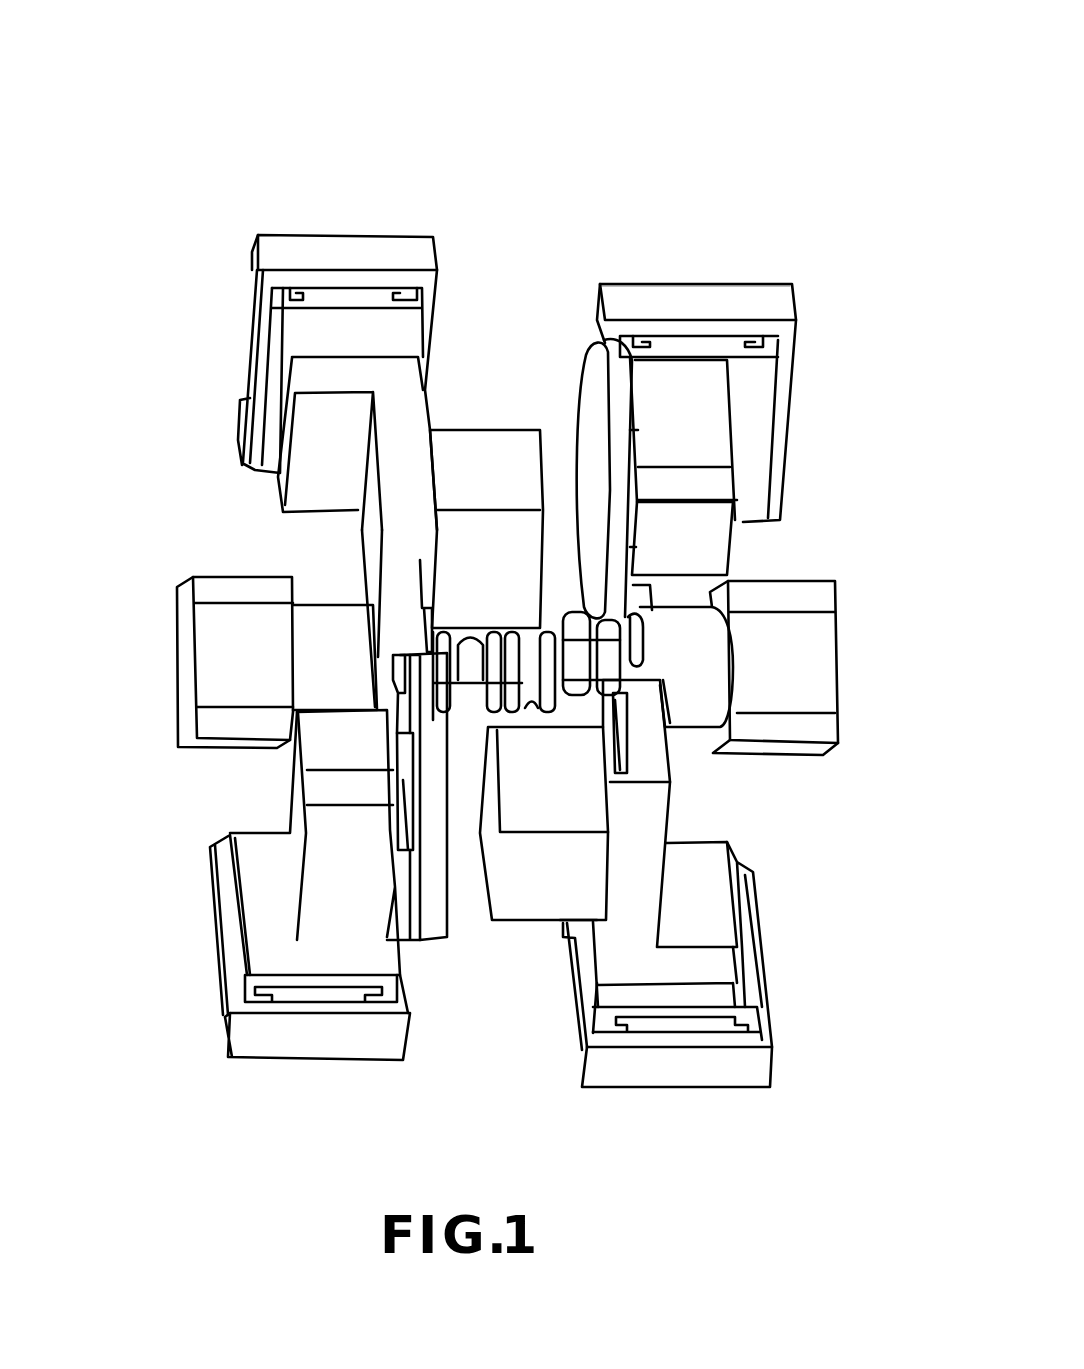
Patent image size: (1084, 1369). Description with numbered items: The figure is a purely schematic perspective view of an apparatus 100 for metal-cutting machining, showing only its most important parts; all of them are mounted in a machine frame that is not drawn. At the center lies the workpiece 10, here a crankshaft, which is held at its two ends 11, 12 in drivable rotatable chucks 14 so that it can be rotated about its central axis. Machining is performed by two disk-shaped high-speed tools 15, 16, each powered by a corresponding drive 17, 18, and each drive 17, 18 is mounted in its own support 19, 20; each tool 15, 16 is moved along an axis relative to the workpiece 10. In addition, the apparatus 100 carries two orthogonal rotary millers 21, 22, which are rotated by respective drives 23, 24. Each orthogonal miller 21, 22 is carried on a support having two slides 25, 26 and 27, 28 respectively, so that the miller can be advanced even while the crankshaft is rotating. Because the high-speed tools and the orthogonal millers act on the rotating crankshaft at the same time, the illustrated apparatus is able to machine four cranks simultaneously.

The apparatus 100 is at (602, 160).
The workpiece 10 is at (540, 560).
The end 11 is at (377, 660).
The end 12 is at (645, 660).
The chucks 14 is at (685, 707).
The disk-shaped high-speed tool 15 is at (613, 377).
The disk-shaped high-speed tool 16 is at (423, 913).
The drive 17 is at (710, 420).
The drive 18 is at (332, 858).
The support 19 is at (761, 252).
The support 20 is at (215, 1080).
The orthogonal rotary miller 21 is at (473, 645).
The orthogonal rotary miller 22 is at (533, 707).
The drive 23 is at (463, 537).
The drive 24 is at (538, 895).
The slide 25 is at (390, 460).
The slide 26 is at (333, 320).
The slide 27 is at (647, 818).
The slide 28 is at (747, 993).